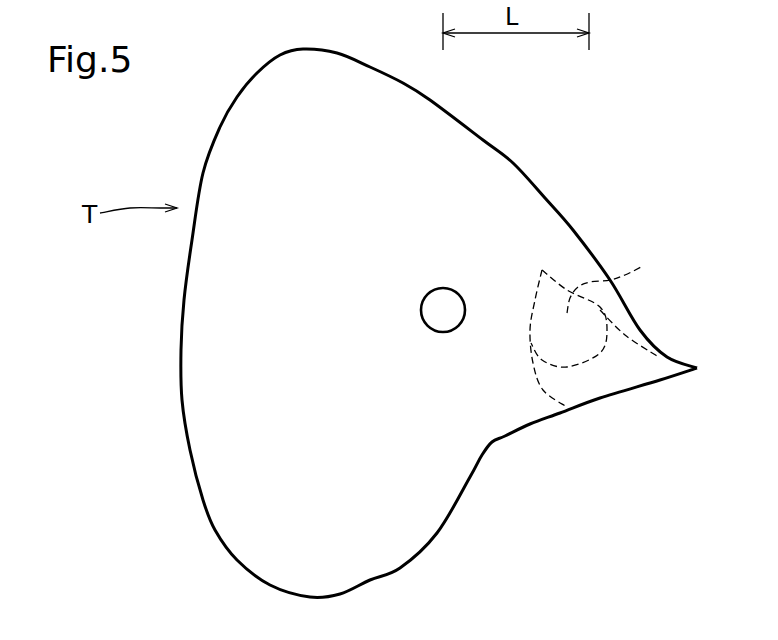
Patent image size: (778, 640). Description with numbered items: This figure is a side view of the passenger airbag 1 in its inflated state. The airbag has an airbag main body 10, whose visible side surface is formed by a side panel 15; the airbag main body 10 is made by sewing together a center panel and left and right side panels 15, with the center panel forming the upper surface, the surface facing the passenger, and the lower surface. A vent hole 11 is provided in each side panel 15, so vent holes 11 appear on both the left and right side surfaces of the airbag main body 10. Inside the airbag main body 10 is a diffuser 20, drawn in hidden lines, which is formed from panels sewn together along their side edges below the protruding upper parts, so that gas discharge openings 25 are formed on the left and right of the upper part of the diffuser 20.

The passenger airbag 1 is at (530, 127).
The airbag main body 10 is at (570, 186).
The side panel 15 is at (412, 120).
The vent hole 11 is at (440, 305).
The diffuser 20 is at (532, 377).
The gas discharge opening 25 is at (623, 283).